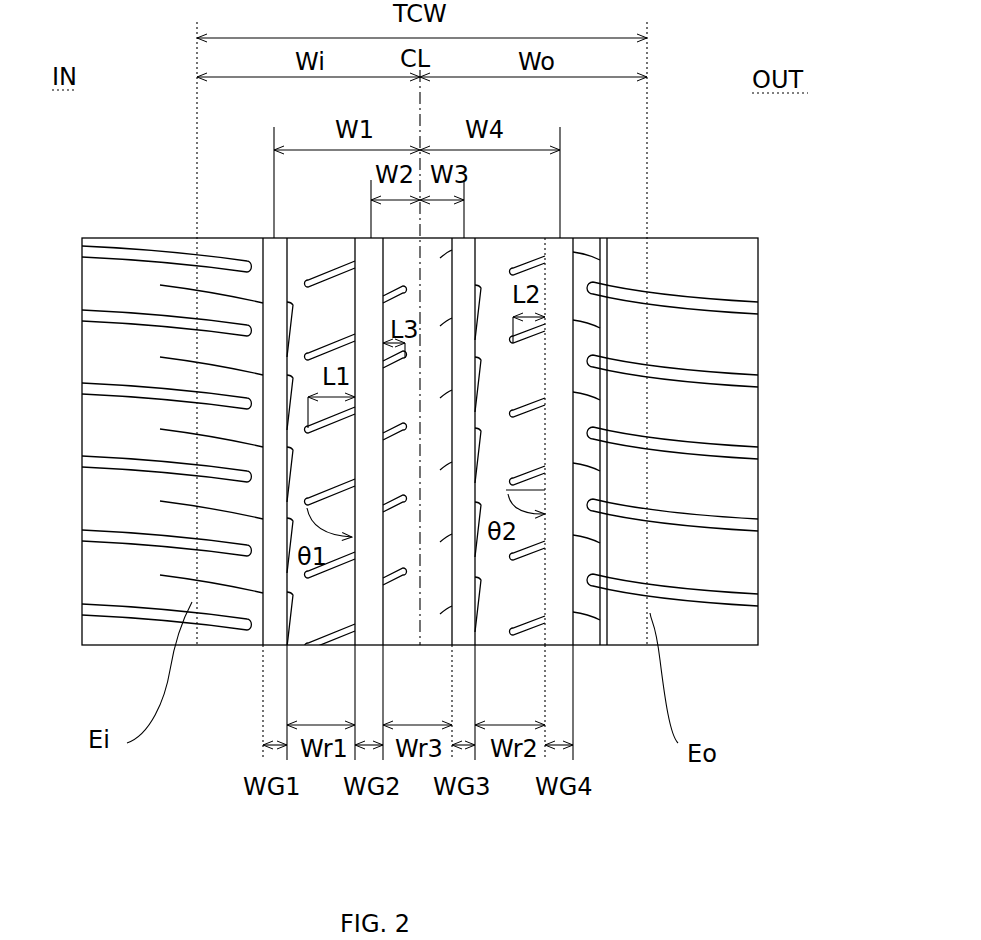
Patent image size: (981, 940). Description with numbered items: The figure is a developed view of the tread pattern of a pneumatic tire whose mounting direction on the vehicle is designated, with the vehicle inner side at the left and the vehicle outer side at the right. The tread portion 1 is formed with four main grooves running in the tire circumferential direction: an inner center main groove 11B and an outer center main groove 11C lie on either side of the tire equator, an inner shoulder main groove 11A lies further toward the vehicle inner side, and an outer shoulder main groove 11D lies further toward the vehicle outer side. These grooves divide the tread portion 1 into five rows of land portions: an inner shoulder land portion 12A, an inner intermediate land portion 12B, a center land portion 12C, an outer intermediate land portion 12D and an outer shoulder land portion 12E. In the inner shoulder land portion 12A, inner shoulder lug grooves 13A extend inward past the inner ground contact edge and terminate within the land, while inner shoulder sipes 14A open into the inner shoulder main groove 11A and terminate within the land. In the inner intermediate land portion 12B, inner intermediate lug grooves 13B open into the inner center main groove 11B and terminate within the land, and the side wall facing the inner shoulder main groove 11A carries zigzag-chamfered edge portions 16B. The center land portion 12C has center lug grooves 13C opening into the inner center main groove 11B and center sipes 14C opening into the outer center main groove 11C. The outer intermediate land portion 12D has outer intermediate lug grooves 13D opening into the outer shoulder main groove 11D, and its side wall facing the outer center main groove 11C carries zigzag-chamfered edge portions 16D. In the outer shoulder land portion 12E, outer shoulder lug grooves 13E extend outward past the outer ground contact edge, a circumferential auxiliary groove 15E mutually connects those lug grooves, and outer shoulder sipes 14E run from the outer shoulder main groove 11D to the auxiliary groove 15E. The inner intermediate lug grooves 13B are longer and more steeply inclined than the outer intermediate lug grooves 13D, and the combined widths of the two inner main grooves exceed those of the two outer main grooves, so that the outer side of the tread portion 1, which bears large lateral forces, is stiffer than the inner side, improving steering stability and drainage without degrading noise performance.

The tread portion 1 is at (722, 237).
The inner shoulder main groove 11A is at (262, 245).
The inner center main groove 11B is at (370, 246).
The outer center main groove 11C is at (467, 255).
The outer shoulder main groove 11D is at (562, 257).
The inner shoulder land portion 12A is at (150, 478).
The inner intermediate land portion 12B is at (278, 448).
The center land portion 12C is at (465, 441).
The outer intermediate land portion 12D is at (549, 443).
The outer shoulder land portion 12E is at (665, 413).
The inner shoulder lug grooves 13A is at (140, 615).
The inner intermediate lug grooves 13B is at (337, 580).
The center lug grooves 13C is at (397, 590).
The outer intermediate lug grooves 13D is at (540, 630).
The outer shoulder lug grooves 13E is at (672, 597).
The inner shoulder sipes 14A is at (237, 590).
The center sipes 14C is at (448, 612).
The outer shoulder sipes 14E is at (578, 613).
The circumferential auxiliary groove 15E is at (607, 252).
The edge portions 16B is at (282, 612).
The edge portions 16D is at (479, 605).